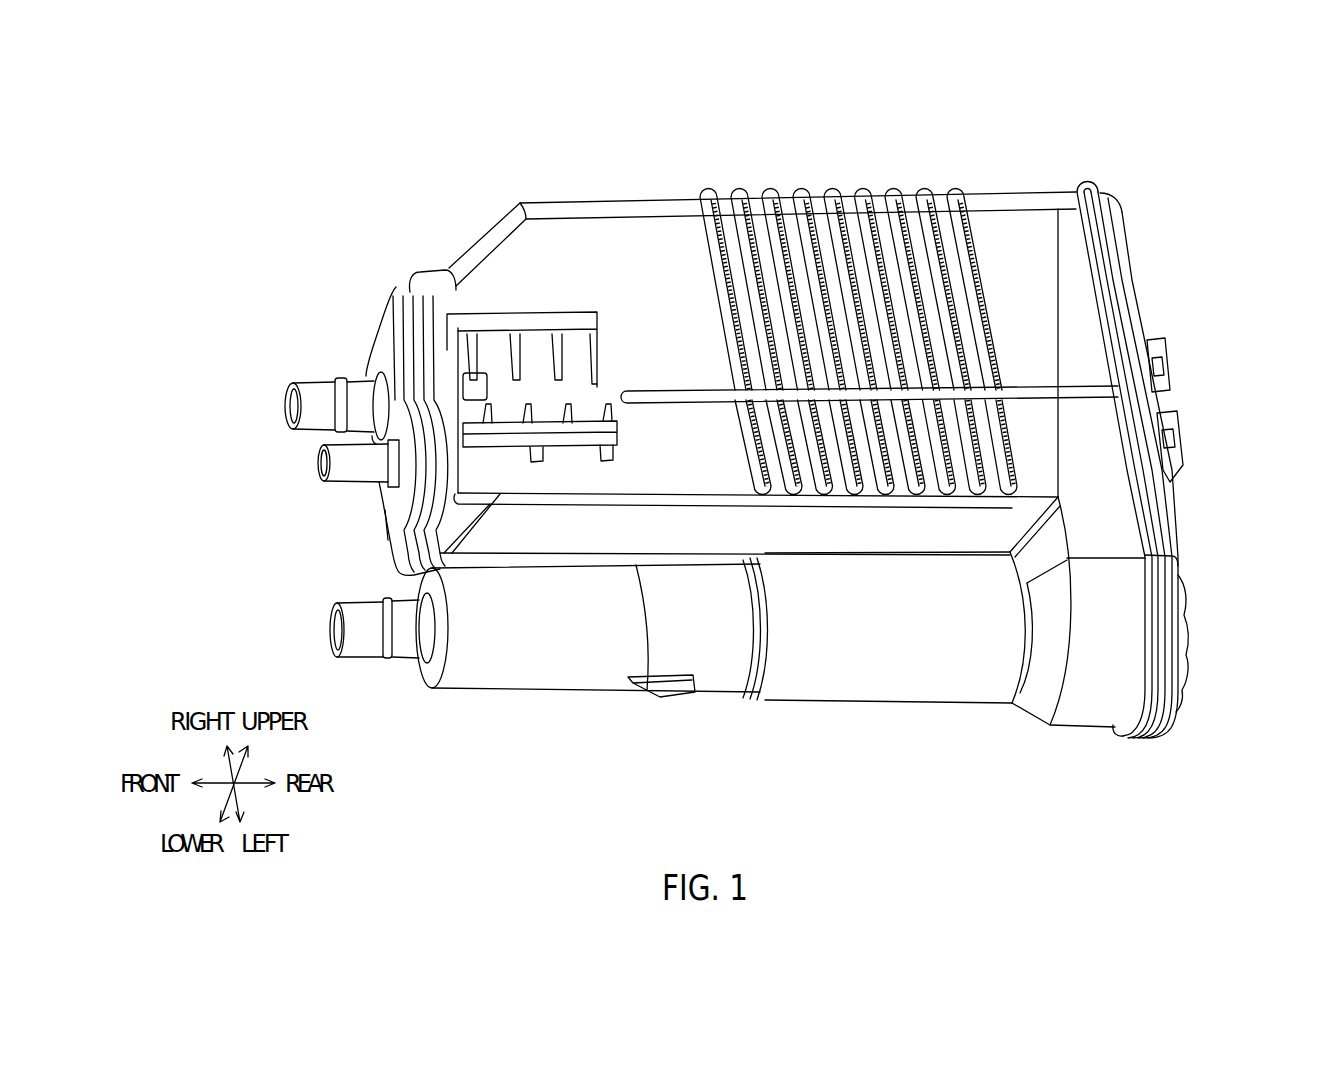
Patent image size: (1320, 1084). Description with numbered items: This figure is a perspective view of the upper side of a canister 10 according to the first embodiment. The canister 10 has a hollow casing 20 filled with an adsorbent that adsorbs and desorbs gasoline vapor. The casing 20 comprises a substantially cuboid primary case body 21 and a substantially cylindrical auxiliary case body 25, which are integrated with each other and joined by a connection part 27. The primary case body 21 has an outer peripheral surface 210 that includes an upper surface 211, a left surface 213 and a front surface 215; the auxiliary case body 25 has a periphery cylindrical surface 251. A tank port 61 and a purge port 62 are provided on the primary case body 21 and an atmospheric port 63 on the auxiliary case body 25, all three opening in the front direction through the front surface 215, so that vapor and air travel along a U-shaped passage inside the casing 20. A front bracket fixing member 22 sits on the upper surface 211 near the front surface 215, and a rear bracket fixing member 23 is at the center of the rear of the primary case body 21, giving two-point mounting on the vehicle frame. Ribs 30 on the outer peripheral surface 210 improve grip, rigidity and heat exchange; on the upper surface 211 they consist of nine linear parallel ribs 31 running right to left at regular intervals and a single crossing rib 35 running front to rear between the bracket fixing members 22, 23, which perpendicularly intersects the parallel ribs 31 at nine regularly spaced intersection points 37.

The canister 10 is at (1152, 142).
The casing 20 is at (1068, 291).
The primary case body 21 is at (601, 236).
The front bracket fixing member 22 is at (493, 320).
The rear bracket fixing member 23 is at (1181, 433).
The auxiliary case body 25 is at (500, 673).
The connection part 27 is at (393, 559).
The ribs 30 is at (945, 420).
The parallel ribs 31 is at (767, 210).
The crossing rib 35 is at (1070, 386).
The intersection points 37 is at (812, 495).
The tank port 61 is at (286, 405).
The purge port 62 is at (317, 462).
The atmospheric port 63 is at (330, 630).
The outer peripheral surface 210 is at (647, 442).
The upper surface 211 is at (1023, 226).
The left surface 213 is at (574, 530).
The front surface 215 is at (386, 347).
The periphery cylindrical surface 251 is at (846, 690).